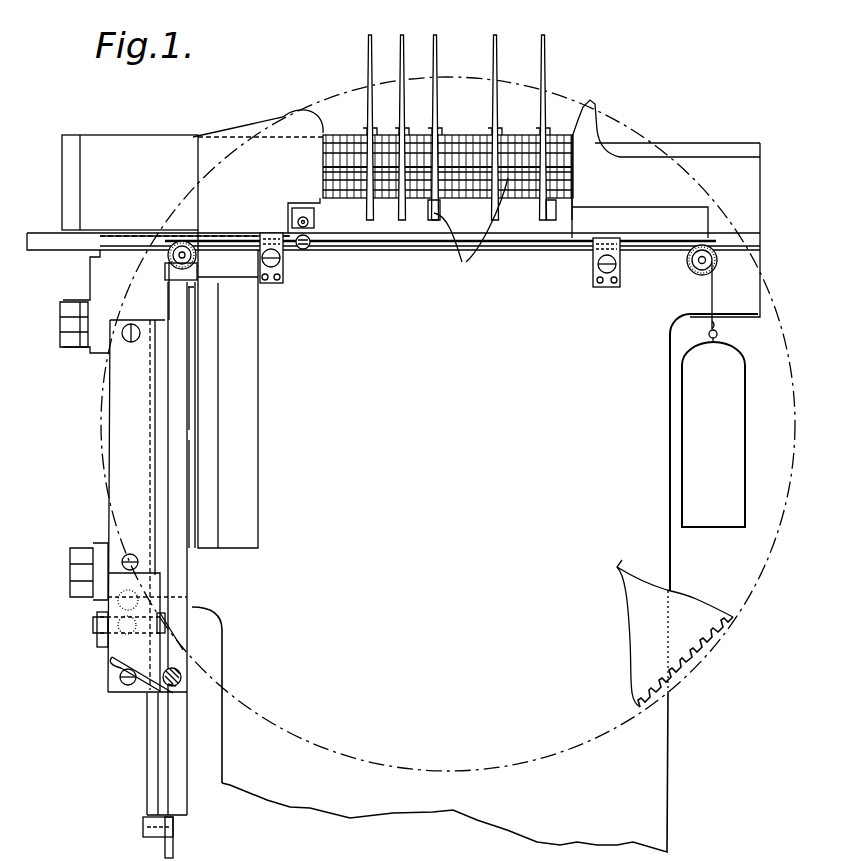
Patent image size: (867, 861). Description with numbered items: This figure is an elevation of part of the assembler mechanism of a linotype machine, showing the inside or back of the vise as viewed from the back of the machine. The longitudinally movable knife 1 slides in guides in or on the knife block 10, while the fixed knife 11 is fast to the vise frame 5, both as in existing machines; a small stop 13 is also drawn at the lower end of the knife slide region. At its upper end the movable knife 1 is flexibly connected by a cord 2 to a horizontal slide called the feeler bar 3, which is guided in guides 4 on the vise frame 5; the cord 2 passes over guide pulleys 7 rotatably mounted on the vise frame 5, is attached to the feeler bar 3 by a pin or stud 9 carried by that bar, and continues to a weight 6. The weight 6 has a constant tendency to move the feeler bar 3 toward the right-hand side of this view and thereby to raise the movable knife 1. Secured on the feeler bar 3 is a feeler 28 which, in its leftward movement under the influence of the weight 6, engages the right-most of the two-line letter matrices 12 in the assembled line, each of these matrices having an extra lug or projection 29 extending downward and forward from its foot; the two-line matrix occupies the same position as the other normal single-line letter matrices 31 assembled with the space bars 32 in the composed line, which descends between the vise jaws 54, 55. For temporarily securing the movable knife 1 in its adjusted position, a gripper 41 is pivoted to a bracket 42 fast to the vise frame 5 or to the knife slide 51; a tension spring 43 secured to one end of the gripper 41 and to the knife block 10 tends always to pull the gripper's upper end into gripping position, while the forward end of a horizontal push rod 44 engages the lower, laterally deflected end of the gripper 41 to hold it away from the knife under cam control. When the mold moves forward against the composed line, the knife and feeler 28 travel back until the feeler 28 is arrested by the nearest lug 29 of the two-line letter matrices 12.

The movable knife 1 is at (184, 728).
The cord 2 is at (165, 306).
The feeler bar 3 is at (412, 248).
The guides 4 is at (447, 260).
The vise frame 5 is at (668, 362).
The weight 6 is at (713, 424).
The guide pulleys 7 is at (168, 262).
The pin or stud 9 is at (310, 238).
The knife block 10 is at (102, 432).
The fixed knife 11 is at (205, 466).
The 2-line letter matrices 12 is at (471, 227).
The stop 13 is at (172, 845).
The feeler 28 is at (304, 205).
The lug or projection 29 is at (430, 215).
The matrices 31 is at (505, 188).
The space bars 32 is at (402, 108).
The gripper 41 is at (118, 675).
The bracket 42 is at (100, 644).
The tension spring 43 is at (165, 598).
The push rod 44 is at (182, 690).
The knife slide 51 is at (136, 506).
The vise jaw 54 is at (268, 121).
The vise jaw 55 is at (598, 104).